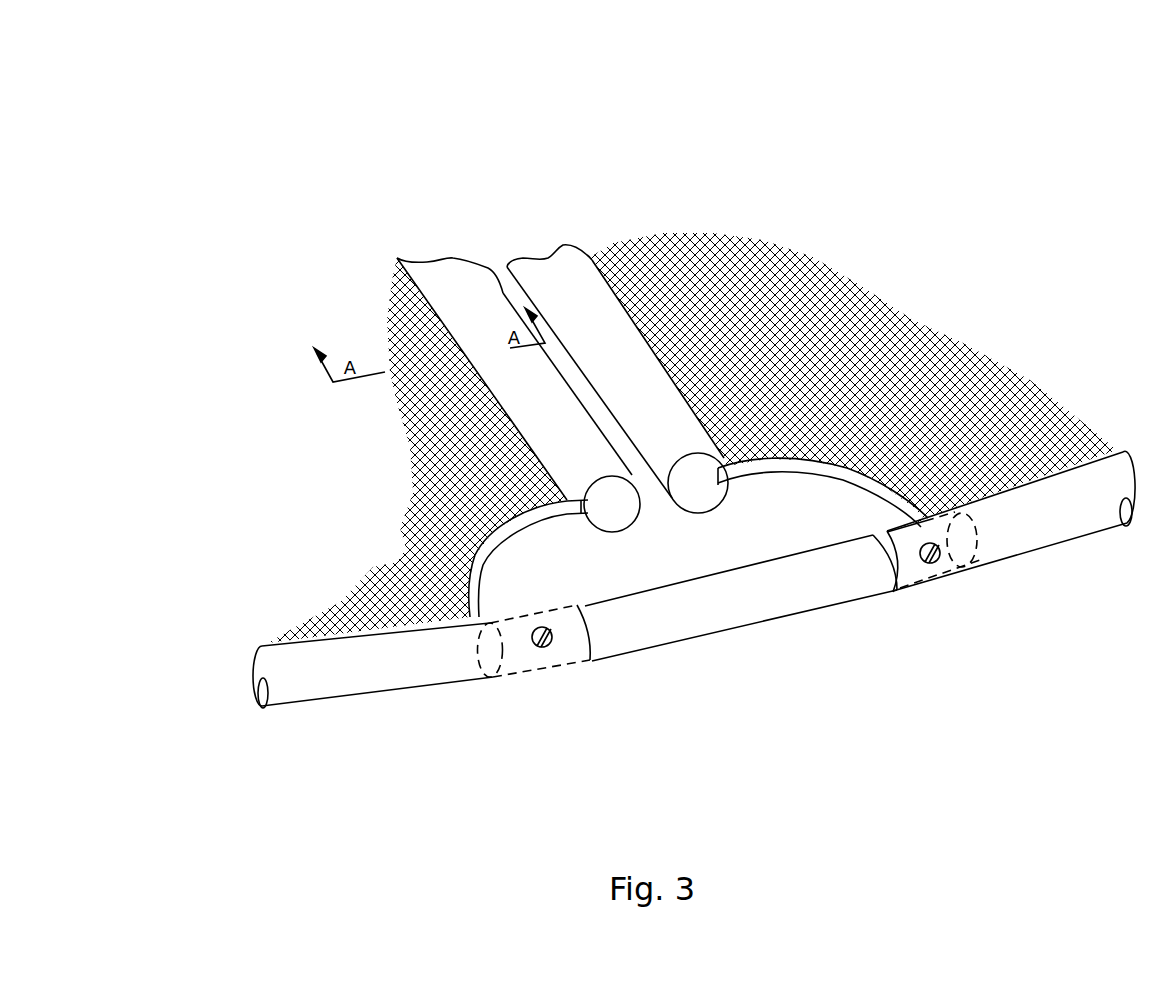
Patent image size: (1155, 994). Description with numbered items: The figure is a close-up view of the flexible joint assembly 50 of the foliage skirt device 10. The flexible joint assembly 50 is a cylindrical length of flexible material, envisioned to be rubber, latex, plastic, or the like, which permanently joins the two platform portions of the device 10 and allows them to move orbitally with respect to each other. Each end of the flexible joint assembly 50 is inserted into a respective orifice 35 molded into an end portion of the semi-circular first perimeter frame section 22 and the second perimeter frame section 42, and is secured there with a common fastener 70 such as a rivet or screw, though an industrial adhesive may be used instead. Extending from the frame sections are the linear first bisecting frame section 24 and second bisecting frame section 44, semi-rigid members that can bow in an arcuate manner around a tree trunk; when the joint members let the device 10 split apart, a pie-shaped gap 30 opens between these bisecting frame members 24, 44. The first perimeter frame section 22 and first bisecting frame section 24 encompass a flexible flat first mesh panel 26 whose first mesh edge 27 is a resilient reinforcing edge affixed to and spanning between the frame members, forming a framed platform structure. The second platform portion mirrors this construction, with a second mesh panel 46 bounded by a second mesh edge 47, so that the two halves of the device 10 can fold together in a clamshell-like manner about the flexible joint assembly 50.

The foliage skirt device 10 is at (168, 148).
The first perimeter frame section 22 is at (363, 684).
The first bisecting frame section 24 is at (480, 325).
The first mesh panel 26 is at (400, 560).
The first mesh edge 27 is at (493, 533).
The pie-shaped gap 30 is at (516, 293).
The orifice 35 is at (874, 536).
The second perimeter frame section 42 is at (1080, 520).
The second bisecting frame section 44 is at (583, 320).
The second mesh panel 46 is at (975, 380).
The second mesh edge 47 is at (758, 462).
The flexible joint assembly 50 is at (537, 678).
The fastener 70 is at (552, 644).